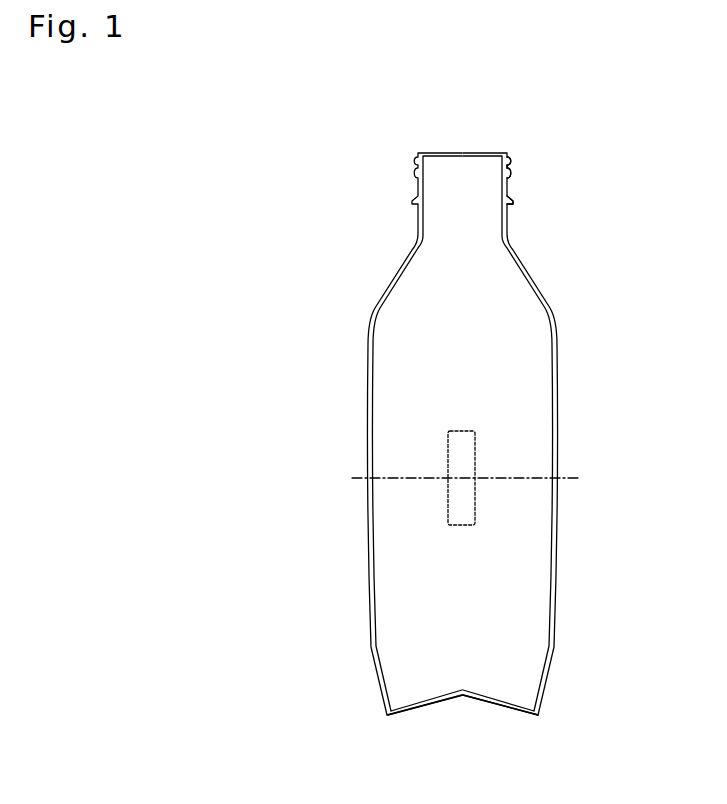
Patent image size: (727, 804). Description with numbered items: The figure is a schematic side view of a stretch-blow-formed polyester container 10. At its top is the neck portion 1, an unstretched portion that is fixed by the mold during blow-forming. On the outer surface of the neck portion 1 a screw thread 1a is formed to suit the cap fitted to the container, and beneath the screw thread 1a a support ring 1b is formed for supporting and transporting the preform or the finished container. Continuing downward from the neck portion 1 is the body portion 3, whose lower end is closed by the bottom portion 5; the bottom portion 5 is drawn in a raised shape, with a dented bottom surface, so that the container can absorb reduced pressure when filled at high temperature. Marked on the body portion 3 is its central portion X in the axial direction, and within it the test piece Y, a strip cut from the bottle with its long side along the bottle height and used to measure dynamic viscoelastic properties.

The stretch-blow-formed polyester container 10 is at (481, 122).
The neck portion 1 is at (418, 153).
The screw thread 1a is at (512, 160).
The support ring 1b is at (514, 200).
The body portion 3 is at (321, 239).
The bottom portion 5 is at (461, 699).
The central portion of the body portion X is at (475, 479).
The test piece Y is at (466, 431).